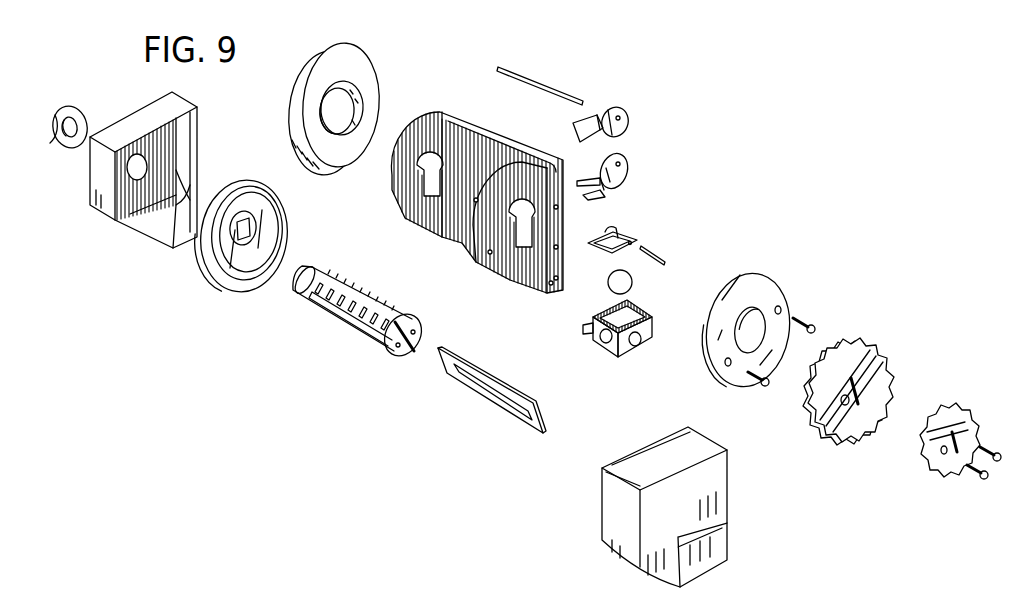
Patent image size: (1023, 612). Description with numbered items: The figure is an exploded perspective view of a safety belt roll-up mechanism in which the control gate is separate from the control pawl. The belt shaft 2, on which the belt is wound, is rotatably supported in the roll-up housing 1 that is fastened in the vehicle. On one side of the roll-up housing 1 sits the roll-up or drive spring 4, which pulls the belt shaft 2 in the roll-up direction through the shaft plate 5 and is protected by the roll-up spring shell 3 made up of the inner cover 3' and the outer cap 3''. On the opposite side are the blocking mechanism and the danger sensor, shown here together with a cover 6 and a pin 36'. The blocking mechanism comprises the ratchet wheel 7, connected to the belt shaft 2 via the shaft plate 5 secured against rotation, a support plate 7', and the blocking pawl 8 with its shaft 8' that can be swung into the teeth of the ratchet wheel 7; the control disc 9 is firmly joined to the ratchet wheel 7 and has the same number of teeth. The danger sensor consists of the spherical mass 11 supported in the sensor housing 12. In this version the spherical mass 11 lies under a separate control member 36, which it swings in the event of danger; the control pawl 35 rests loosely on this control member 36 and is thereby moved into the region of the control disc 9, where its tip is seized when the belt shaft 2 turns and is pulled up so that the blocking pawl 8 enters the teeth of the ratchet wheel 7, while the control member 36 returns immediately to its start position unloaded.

The roll-up housing 1 is at (530, 133).
The belt shaft 2 is at (340, 322).
The roll-up spring shell 3 is at (126, 170).
The inner cover 3' is at (334, 94).
The outer cap 3'' is at (61, 109).
The roll-up spring 4 is at (220, 287).
The shaft plate 5 is at (478, 400).
The cover housing 6 is at (713, 513).
The ratchet wheel 7 is at (850, 374).
The support plate 7' is at (754, 316).
The blocking pawl 8 is at (602, 105).
The shaft 8' is at (540, 72).
The control disc 9 is at (967, 415).
The spherical mass 11 is at (633, 288).
The sensor housing 12 is at (652, 330).
The control pawl 35 is at (632, 165).
The control member 36 is at (625, 228).
The pin 36' is at (671, 244).